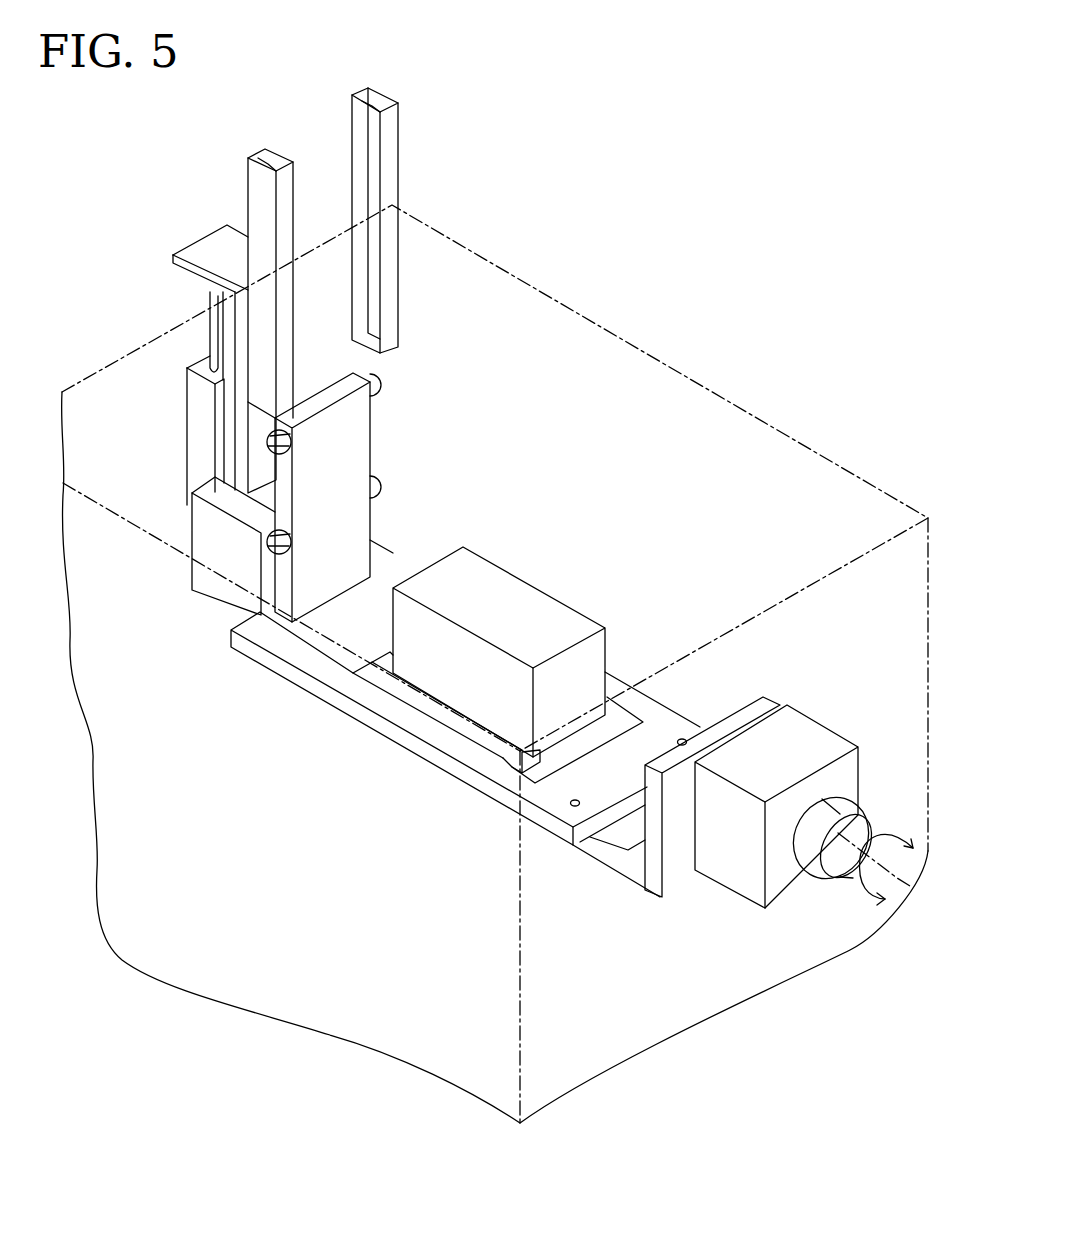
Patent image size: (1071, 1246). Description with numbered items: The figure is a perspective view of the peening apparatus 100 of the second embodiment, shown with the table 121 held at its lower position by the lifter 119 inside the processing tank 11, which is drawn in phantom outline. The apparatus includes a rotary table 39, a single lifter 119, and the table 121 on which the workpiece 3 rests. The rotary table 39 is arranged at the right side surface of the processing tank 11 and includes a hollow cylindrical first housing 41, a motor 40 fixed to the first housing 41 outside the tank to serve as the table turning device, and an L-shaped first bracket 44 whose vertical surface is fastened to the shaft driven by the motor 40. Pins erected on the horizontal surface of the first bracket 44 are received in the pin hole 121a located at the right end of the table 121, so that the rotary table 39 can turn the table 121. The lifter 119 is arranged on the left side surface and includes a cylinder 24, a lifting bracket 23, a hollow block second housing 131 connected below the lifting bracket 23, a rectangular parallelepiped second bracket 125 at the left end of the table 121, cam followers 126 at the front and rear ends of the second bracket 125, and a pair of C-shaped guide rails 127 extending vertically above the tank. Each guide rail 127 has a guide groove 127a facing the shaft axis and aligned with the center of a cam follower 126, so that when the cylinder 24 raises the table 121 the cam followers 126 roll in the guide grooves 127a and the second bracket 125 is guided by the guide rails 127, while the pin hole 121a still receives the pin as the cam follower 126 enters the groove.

The peening apparatus 100 is at (937, 94).
The processing tank 11 is at (783, 432).
The lifter 119 is at (209, 149).
The guide rail 127 is at (320, 283).
The guide groove 127a is at (362, 153).
The lifting bracket 23 is at (197, 237).
The cylinder 24 is at (186, 430).
The second housing 131 is at (211, 600).
The second bracket 125 is at (371, 437).
The cam follower 126 is at (290, 443).
The table 121 is at (465, 696).
The pin hole 121a is at (572, 802).
The workpiece 3 is at (541, 600).
The rotary table 39 is at (730, 911).
The first bracket 44 is at (768, 697).
The first housing 41 is at (825, 727).
The motor 40 is at (836, 879).